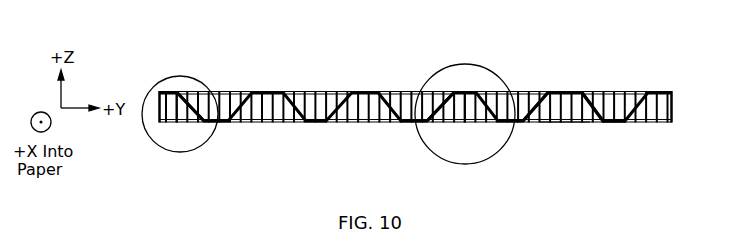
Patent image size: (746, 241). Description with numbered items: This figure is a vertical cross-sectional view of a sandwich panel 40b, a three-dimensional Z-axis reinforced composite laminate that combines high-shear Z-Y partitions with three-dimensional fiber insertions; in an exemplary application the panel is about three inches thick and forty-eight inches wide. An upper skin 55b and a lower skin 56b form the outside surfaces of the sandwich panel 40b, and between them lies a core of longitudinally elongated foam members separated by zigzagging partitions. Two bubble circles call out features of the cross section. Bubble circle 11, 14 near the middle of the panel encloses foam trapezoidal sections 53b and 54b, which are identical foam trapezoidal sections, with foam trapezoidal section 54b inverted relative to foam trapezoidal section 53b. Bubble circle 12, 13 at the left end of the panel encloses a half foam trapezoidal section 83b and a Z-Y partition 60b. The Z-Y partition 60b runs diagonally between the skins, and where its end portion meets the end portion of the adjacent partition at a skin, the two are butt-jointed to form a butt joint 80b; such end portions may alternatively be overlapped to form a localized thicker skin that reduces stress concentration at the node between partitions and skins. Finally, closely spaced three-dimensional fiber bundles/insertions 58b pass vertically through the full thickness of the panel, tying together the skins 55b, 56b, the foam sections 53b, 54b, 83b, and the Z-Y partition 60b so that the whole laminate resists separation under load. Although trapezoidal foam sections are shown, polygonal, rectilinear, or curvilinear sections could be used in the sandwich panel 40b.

The bubble circle 11 is at (496, 130).
The bubble circle 14 is at (502, 150).
The bubble circle 12 is at (180, 139).
The bubble circle 13 is at (175, 152).
The sandwich panel 40b is at (682, 108).
The foam trapezoidal section 53b is at (425, 102).
The foam trapezoidal section 54b is at (468, 107).
The upper skin 55b is at (543, 90).
The lower skin 56b is at (565, 124).
The 3D fiber bundles/insertions 58b is at (615, 100).
The Z-Y partition 60b is at (190, 104).
The butt joint 80b is at (455, 95).
The half foam trapezoidal section 83b is at (177, 113).